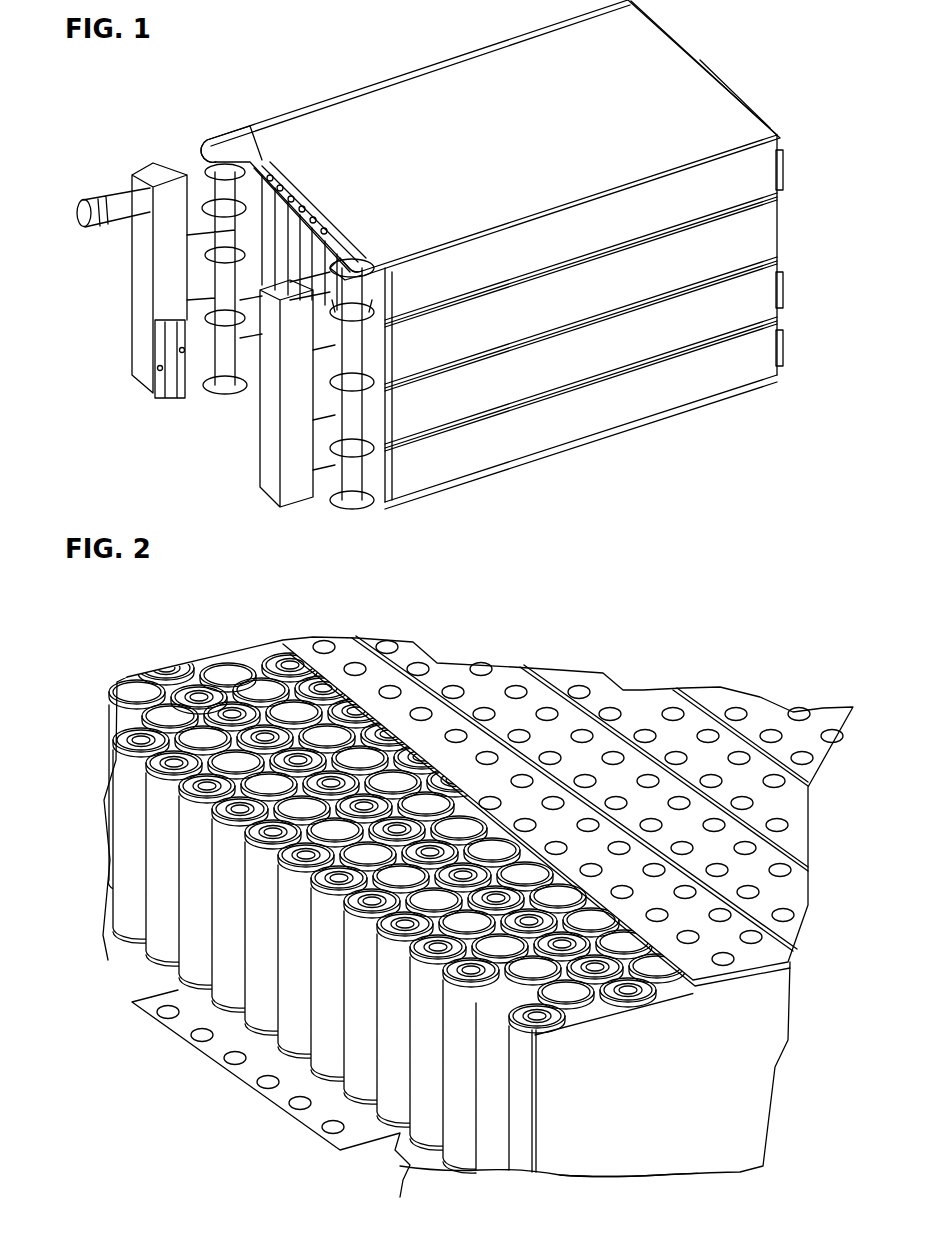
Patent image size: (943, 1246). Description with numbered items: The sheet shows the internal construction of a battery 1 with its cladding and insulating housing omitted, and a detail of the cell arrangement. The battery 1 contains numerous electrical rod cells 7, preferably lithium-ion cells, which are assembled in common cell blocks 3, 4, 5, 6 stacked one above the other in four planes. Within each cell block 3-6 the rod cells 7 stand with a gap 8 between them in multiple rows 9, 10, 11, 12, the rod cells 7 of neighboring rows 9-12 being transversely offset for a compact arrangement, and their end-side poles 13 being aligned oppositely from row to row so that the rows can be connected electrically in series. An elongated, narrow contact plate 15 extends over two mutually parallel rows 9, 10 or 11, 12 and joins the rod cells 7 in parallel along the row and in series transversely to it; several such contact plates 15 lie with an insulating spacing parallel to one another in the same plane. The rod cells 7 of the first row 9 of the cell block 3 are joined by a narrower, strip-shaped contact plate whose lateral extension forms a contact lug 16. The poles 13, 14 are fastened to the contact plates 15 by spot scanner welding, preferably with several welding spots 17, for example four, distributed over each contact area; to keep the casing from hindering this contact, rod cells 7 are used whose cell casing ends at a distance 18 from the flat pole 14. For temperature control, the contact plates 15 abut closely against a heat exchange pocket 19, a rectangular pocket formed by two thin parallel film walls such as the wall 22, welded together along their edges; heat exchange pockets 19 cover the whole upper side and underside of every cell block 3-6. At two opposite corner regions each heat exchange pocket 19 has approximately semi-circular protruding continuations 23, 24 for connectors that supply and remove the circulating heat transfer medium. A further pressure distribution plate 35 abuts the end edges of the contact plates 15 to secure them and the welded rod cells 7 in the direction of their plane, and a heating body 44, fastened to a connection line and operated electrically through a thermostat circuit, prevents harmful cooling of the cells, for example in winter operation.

In FIG. 1, the battery 1 is at (712, 62).
In FIG. 1, the cell block 3 is at (600, 234).
In FIG. 1, the cell block 4 is at (556, 312).
In FIG. 1, the cell block 5 is at (614, 352).
In FIG. 1, the cell block 6 is at (583, 427).
In FIG. 1, the rod cell 7 is at (290, 216).
In FIG. 2, the rod cell 7 is at (329, 1010).
In FIG. 2, the gap 8 is at (645, 1005).
In FIG. 2, the row 9 is at (578, 1032).
In FIG. 2, the row 10 is at (615, 1012).
In FIG. 2, the row 11 is at (660, 1008).
In FIG. 2, the row 12 is at (683, 985).
In FIG. 2, the end-side pole 13 is at (200, 690).
In FIG. 2, the flat pole 14 is at (230, 668).
In FIG. 2, the contact plate 15 is at (283, 648).
In FIG. 1, the contact lug 16 is at (300, 206).
In FIG. 2, the welding spot 17 is at (577, 688).
In FIG. 2, the distance 18 is at (605, 1060).
In FIG. 1, the heat exchange pocket 19 is at (370, 113).
In FIG. 1, the thin wall 22 is at (740, 100).
In FIG. 1, the protruding continuation 23 is at (228, 147).
In FIG. 1, the protruding continuation 24 is at (355, 264).
In FIG. 2, the pressure distribution plate 35 is at (710, 1146).
In FIG. 1, the heating body 44 is at (175, 342).